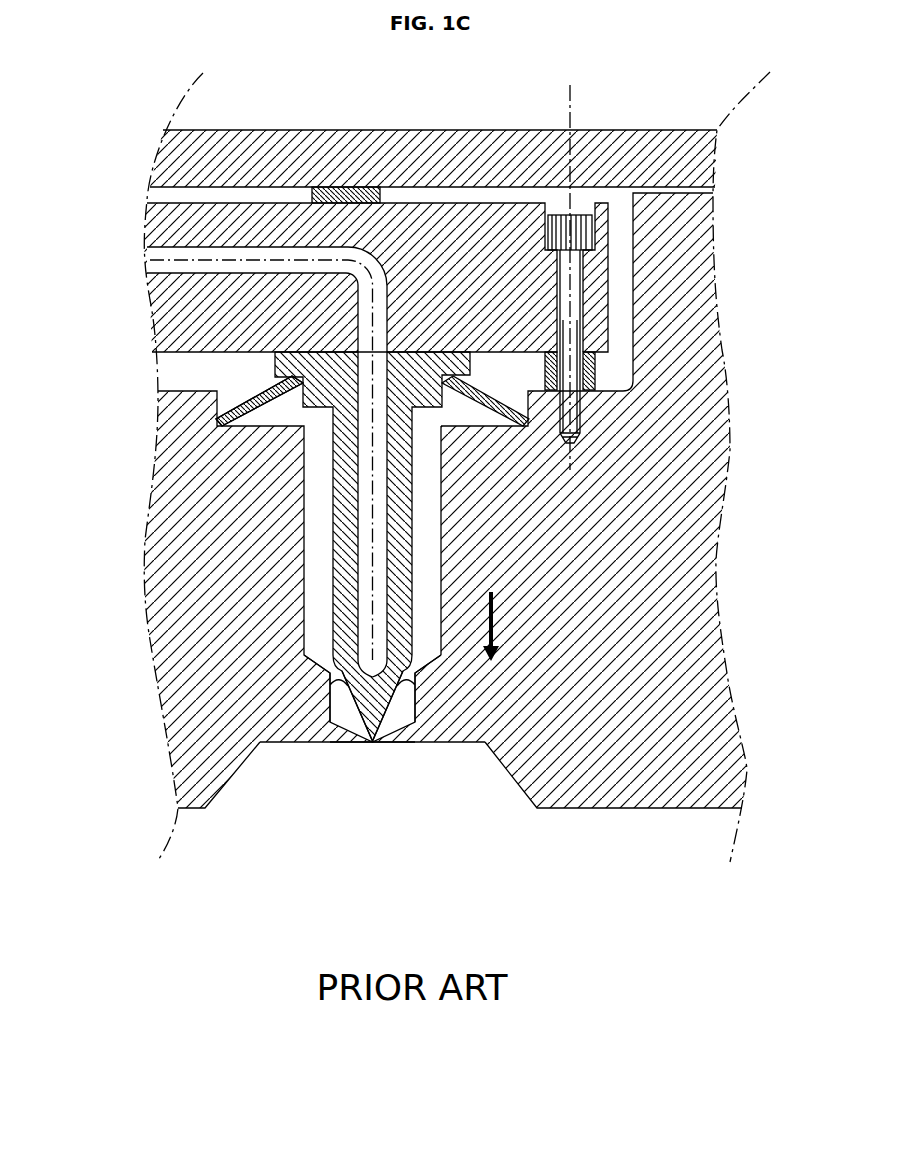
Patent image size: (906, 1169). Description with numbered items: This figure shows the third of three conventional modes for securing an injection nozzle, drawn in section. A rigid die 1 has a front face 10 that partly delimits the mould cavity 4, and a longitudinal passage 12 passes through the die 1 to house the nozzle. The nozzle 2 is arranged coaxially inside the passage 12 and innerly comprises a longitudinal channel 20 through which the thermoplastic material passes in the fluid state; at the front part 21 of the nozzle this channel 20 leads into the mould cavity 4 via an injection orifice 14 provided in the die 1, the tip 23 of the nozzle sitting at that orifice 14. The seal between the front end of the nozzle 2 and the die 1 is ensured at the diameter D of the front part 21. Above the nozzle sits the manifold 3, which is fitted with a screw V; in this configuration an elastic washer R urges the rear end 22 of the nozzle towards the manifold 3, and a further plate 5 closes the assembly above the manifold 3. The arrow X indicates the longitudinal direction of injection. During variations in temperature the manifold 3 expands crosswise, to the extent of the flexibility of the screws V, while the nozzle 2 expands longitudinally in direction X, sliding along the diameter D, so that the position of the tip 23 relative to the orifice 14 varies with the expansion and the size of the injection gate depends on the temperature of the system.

The die 1 is at (647, 757).
The nozzle 2 is at (342, 532).
The manifold 3 is at (197, 322).
The mould cavity 4 is at (436, 783).
The top plate 5 is at (433, 166).
The front face 10 is at (593, 809).
The longitudinal passage 12 is at (427, 558).
The injection orifice 14 is at (362, 768).
The longitudinal channel 20 is at (378, 518).
The front part 21 is at (418, 672).
The rear end 22 is at (297, 364).
The tip 23 is at (372, 742).
The elastic washer R is at (248, 412).
The diameter D is at (330, 680).
The screw V is at (575, 295).
The direction X is at (500, 626).